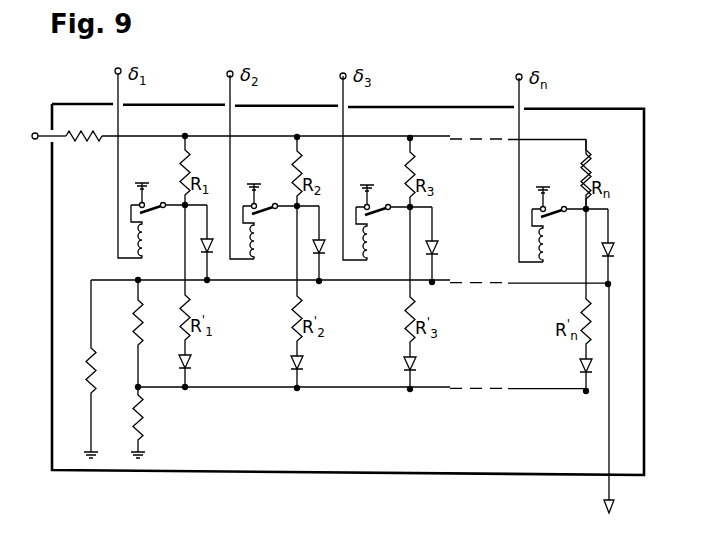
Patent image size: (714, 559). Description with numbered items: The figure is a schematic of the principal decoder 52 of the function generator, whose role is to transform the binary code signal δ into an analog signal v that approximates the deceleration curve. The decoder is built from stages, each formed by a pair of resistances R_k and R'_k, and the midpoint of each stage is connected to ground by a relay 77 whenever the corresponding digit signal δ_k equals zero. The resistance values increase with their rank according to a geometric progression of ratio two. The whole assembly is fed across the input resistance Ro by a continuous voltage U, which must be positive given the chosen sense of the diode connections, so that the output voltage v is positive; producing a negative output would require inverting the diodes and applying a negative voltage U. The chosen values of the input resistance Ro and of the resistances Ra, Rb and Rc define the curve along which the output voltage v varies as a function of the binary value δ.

The principal decoder 52 is at (60, 472).
The relay 77 is at (355, 222).
The continuous voltage U is at (47, 125).
The input resistance Ro is at (84, 151).
The resistance Ra is at (149, 333).
The resistance Rb is at (148, 422).
The resistance Rc is at (101, 369).
The output voltage v is at (608, 412).